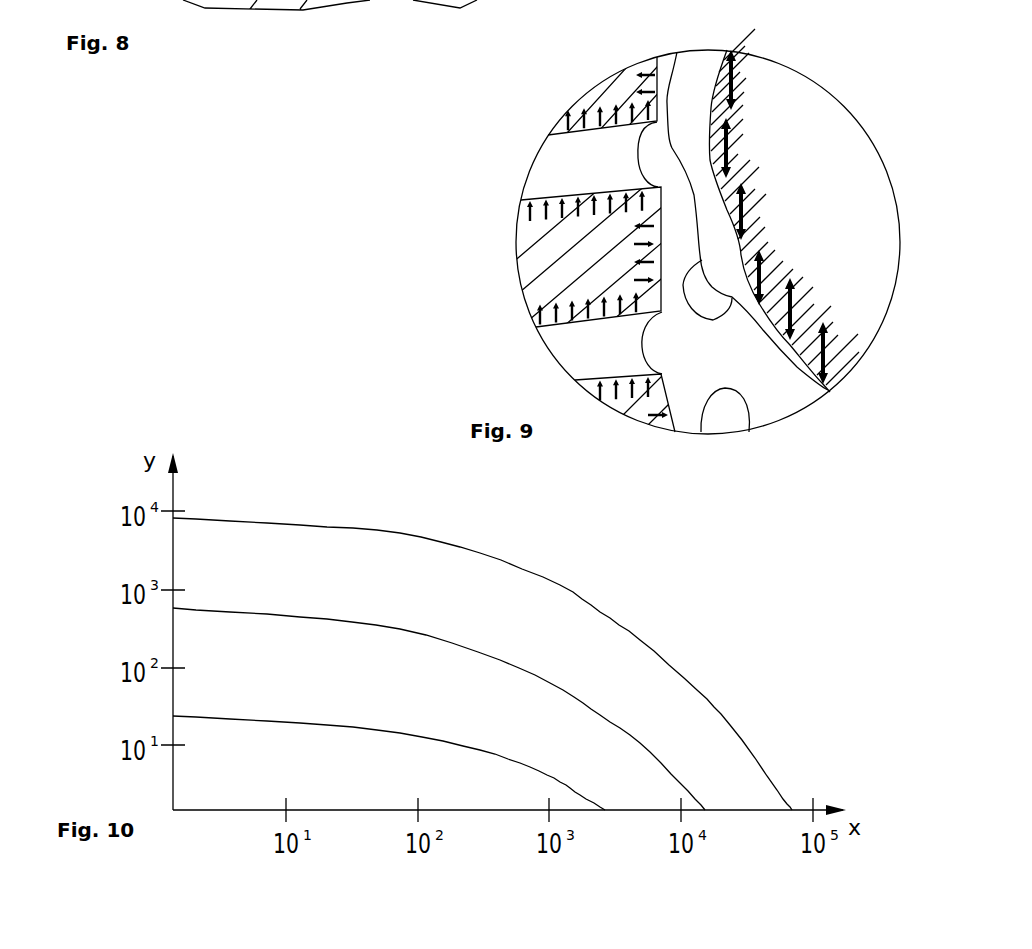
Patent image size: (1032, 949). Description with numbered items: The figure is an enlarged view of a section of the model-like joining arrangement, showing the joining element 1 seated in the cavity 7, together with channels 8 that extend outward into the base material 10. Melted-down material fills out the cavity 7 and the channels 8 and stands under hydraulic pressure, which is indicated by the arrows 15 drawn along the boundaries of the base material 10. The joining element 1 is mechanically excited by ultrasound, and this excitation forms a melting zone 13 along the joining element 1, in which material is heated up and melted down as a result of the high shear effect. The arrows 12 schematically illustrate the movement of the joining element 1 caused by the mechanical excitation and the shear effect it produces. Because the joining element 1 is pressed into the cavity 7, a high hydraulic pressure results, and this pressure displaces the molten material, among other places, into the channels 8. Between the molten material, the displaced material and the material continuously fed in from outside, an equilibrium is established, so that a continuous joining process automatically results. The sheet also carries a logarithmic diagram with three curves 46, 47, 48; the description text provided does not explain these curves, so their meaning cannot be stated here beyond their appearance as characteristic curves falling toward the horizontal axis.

In FIG. 9, the joining element 1 is at (800, 118).
In FIG. 9, the cavity 7 is at (775, 397).
In FIG. 9, the channels 8 is at (542, 170).
In FIG. 9, the base material 10 is at (545, 263).
In FIG. 9, the arrows 12 is at (835, 358).
In FIG. 9, the melting zone 13 is at (750, 117).
In FIG. 9, the arrows 15 is at (612, 100).
In FIG. 10, the characteristic curve 46 is at (482, 654).
In FIG. 10, the characteristic curve 47 is at (439, 698).
In FIG. 10, the characteristic curve 48 is at (389, 748).